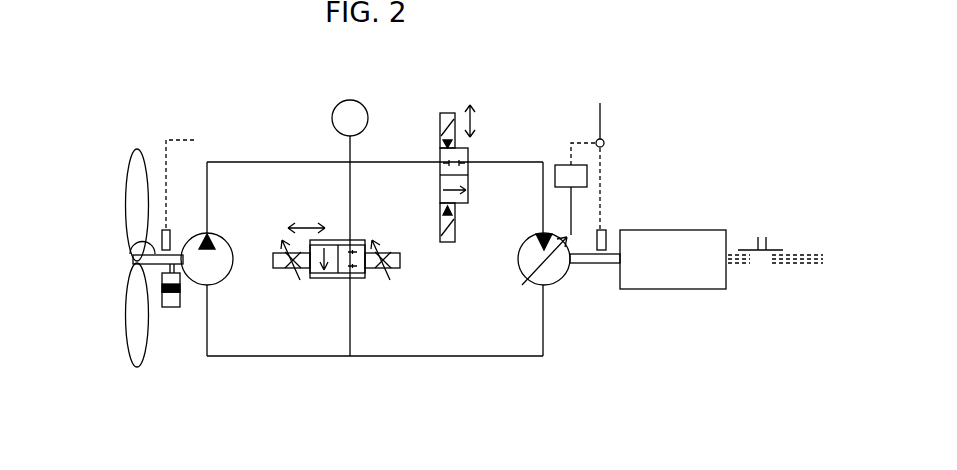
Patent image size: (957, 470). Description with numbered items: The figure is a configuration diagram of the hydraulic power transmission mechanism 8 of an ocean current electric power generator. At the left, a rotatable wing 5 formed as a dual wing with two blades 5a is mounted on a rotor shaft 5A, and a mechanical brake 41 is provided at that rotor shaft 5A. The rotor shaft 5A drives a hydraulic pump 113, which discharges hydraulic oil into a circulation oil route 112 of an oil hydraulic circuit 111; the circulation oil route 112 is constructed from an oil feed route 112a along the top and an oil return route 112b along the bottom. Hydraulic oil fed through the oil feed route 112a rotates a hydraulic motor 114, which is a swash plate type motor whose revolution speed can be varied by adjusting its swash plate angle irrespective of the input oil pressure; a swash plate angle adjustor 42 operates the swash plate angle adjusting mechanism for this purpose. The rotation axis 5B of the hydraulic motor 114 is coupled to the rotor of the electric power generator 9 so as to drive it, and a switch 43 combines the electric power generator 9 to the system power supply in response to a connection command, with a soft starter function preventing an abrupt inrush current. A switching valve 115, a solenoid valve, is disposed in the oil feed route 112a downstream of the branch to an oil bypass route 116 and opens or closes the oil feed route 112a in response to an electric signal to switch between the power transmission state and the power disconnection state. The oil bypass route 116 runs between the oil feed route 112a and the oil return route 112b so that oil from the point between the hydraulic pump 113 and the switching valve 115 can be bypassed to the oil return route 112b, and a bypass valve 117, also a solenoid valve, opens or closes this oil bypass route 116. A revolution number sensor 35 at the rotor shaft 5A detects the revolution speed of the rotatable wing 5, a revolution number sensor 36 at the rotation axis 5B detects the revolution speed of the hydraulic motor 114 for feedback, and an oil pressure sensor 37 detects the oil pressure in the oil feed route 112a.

The rotatable wing 5 is at (113, 200).
The blade 5a is at (135, 148).
The rotor shaft 5A is at (128, 252).
The rotation axis 5B is at (595, 266).
The hydraulic power transmission mechanism 8 is at (405, 150).
The electric power generator 9 is at (672, 290).
The revolution number sensor 35 is at (170, 240).
The revolution number sensor 36 is at (608, 240).
The oil pressure sensor 37 is at (331, 117).
The mechanical brake 41 is at (172, 308).
The swash plate angle adjustor 42 is at (560, 165).
The switch 43 is at (762, 265).
The oil hydraulic circuit 111 is at (405, 368).
The circulation oil route 112 is at (273, 358).
The oil feed route 112a is at (233, 162).
The oil return route 112b is at (308, 356).
The hydraulic pump 113 is at (218, 282).
The hydraulic motor 114 is at (518, 258).
The switching valve 115 is at (440, 185).
The oil bypass route 116 is at (347, 192).
The bypass valve 117 is at (362, 277).